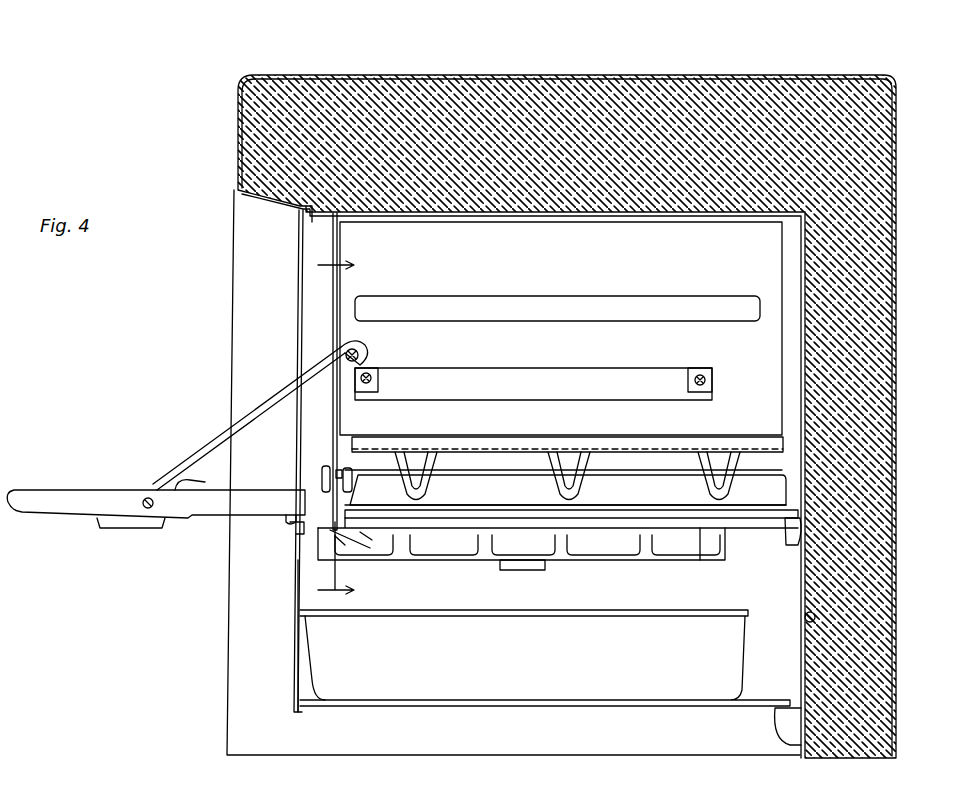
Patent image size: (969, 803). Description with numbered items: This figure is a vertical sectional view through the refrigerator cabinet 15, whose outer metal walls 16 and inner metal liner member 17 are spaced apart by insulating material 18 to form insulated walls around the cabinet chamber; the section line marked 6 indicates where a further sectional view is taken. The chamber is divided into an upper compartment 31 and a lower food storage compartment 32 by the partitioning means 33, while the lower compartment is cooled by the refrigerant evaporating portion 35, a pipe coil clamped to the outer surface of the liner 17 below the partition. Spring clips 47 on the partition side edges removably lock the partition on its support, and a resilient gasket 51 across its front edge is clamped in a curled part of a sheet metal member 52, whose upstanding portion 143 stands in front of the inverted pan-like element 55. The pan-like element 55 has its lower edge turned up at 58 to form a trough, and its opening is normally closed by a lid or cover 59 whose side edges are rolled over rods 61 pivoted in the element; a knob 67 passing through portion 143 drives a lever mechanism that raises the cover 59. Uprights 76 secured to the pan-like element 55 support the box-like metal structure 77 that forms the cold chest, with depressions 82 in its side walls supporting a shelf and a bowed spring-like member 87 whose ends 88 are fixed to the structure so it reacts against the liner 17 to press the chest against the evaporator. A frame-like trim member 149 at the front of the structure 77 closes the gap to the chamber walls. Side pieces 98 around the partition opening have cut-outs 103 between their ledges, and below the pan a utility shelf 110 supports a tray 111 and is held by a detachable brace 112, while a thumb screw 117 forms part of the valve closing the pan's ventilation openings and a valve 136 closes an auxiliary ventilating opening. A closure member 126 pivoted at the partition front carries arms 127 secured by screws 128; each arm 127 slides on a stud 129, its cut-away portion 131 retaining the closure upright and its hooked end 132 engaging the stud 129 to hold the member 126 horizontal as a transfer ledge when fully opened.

The refrigerator cabinet 15 is at (238, 121).
The outer metal panels or walls 16 is at (503, 75).
The inner metal liner member 17 is at (815, 293).
The insulating material 18 is at (560, 102).
The upper compartment 31 is at (300, 300).
The lower food storage compartment 32 is at (355, 736).
The partitioning device or means 33 is at (790, 527).
The refrigerant evaporating portion 35 is at (818, 622).
The spring clips 47 is at (345, 540).
The resilient gasket 51 is at (290, 520).
The sheet metal member 52 is at (297, 532).
The inverted pan-like element 55 is at (760, 500).
The upturned lower edge 58 is at (706, 514).
The lid or cover 59 is at (652, 472).
The rod 61 is at (787, 478).
The knob 67 is at (322, 478).
The uprights 76 is at (438, 488).
The box-like metal structure 77 is at (770, 383).
The depression 82 is at (500, 312).
The bowed spring-like metal member 87 is at (525, 380).
The ends of spring-like member 88 is at (702, 392).
The side pieces 98 is at (718, 566).
The cut-out openings 103 is at (620, 560).
The utility shelf 110 is at (748, 695).
The tray 111 is at (312, 664).
The brace 112 is at (296, 582).
The rotatable thumb screw 117 is at (522, 571).
The closure member 126 is at (62, 488).
The arm 127 is at (256, 410).
The screw 128 is at (148, 498).
The studs 129 is at (345, 368).
The cut away portion 131 is at (210, 478).
The hooked end portion 132 is at (366, 358).
The valve 136 is at (790, 552).
The upstanding portion 143 is at (343, 492).
The frame-like trim member 149 is at (312, 245).
The section line 6 is at (343, 429).